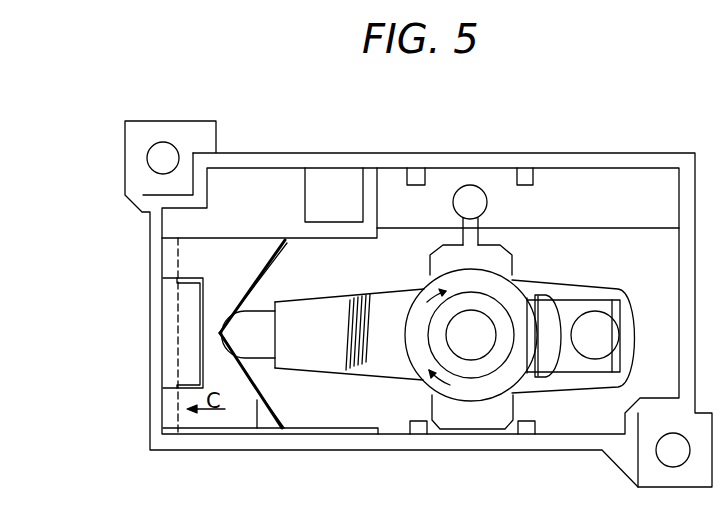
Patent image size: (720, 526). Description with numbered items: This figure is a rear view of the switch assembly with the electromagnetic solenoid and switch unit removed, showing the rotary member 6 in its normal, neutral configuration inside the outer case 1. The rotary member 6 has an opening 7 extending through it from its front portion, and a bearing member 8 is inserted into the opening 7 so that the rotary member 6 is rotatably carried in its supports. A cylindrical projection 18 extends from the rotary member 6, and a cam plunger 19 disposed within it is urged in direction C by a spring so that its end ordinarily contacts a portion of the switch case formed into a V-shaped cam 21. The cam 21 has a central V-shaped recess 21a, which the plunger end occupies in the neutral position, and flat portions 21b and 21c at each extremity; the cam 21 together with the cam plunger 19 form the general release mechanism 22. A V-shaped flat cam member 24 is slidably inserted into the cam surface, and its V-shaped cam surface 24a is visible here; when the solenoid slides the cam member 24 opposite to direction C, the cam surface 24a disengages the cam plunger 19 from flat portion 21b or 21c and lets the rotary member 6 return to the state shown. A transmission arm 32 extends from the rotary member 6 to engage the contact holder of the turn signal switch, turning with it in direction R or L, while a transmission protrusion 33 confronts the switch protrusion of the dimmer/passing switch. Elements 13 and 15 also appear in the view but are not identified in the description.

The outer case 1 is at (589, 153).
The rotary member 6 is at (417, 368).
The opening 7 is at (567, 368).
The bearing member 8 is at (494, 360).
The roller 13 is at (597, 318).
The plate 15 is at (615, 303).
The cylindrical projection 18 is at (383, 290).
The cam plunger 19 is at (262, 333).
The V-shaped cam 21 is at (262, 296).
The central V-shaped recess 21a is at (251, 378).
The flat portion 21b is at (263, 413).
The flat portion 21c is at (262, 260).
The general release mechanism 22 is at (357, 276).
The V-shaped flat cam member 24 is at (270, 423).
The V-shaped cam surface 24a is at (262, 415).
The transmission arm 32 is at (478, 228).
The transmission protrusion 33 is at (552, 318).